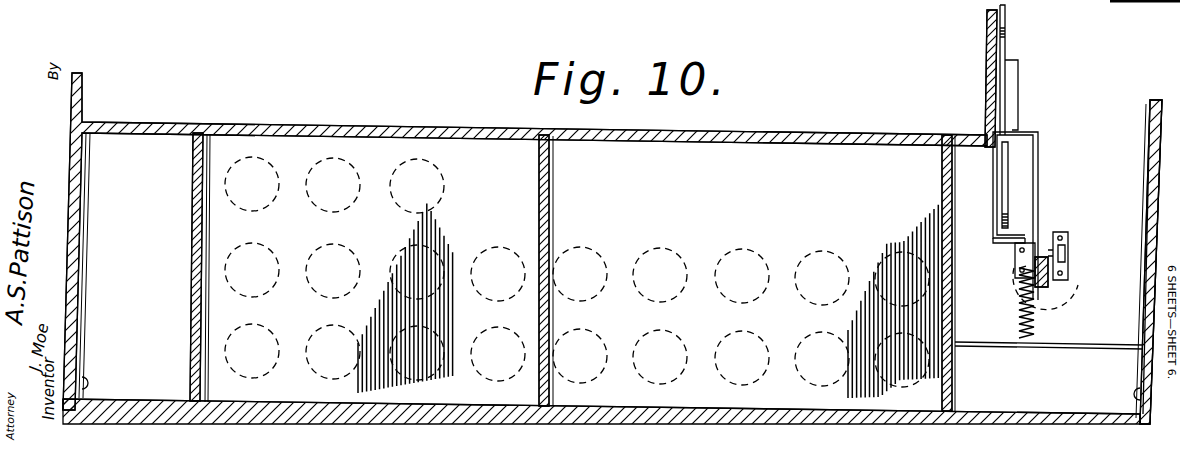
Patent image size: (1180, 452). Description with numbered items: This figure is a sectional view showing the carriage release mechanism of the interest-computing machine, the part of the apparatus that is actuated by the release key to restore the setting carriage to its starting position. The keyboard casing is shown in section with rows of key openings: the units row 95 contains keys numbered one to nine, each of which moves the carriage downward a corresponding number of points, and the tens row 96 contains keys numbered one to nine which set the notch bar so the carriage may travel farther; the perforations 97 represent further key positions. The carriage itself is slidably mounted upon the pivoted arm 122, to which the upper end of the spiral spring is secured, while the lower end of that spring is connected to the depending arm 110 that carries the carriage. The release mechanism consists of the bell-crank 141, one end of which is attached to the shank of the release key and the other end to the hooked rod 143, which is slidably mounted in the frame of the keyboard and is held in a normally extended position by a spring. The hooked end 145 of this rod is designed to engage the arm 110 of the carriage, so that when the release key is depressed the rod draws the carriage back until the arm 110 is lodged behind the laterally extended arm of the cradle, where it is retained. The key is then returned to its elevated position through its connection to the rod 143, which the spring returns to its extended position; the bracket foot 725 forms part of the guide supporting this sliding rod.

The perforations in first compartment 97 is at (400, 178).
The tens row 96 is at (661, 262).
The units row 95 is at (652, 345).
The pivoted arm 122 is at (1007, 49).
The hooked end 145 is at (1025, 133).
The hooked rod 143 is at (1033, 160).
The depending arm 110 is at (1008, 210).
The bracket foot 725 is at (1002, 242).
The bell-crank 141 is at (1050, 245).